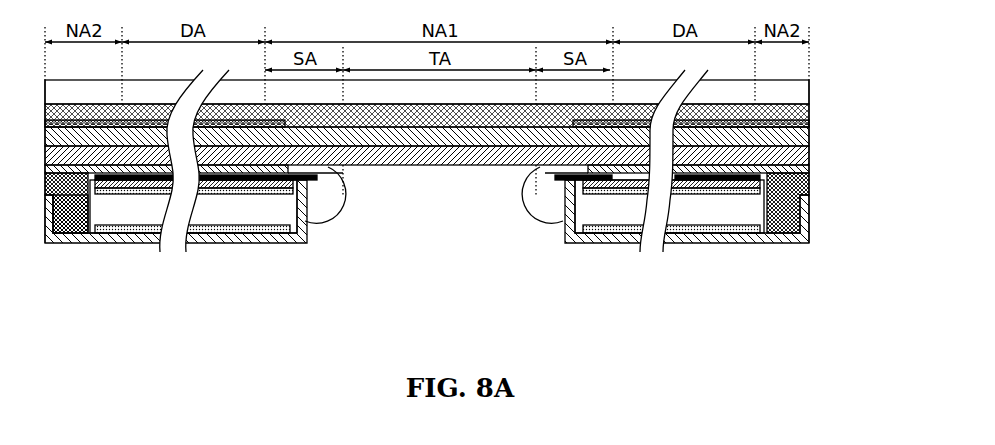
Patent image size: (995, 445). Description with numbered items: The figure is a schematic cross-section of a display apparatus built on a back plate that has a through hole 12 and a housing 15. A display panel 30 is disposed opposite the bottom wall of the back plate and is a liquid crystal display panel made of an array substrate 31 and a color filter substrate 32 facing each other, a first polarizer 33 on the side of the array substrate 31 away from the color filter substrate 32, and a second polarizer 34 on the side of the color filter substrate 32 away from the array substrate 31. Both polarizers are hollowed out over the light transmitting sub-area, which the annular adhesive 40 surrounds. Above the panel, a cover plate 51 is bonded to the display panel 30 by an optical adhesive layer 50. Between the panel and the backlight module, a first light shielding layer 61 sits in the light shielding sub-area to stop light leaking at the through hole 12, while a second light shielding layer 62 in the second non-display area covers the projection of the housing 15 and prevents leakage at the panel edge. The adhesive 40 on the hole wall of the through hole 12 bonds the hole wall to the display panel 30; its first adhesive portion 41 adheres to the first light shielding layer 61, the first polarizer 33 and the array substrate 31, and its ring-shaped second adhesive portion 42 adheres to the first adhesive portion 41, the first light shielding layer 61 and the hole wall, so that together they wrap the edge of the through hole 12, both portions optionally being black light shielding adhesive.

The through hole 12 is at (478, 228).
The housing 15 is at (75, 232).
The display panel 30 is at (472, 143).
The array substrate 31 is at (800, 157).
The color filter substrate 32 is at (806, 140).
The first polarizer 33 is at (452, 172).
The second polarizer 34 is at (810, 122).
The adhesive 40 is at (427, 242).
The first adhesive portion 41 is at (338, 175).
The second adhesive portion 42 is at (313, 207).
The optical adhesive layer 50 is at (807, 112).
The cover plate 51 is at (798, 88).
The first light shielding layer 61 is at (287, 192).
The second light shielding layer 62 is at (50, 176).